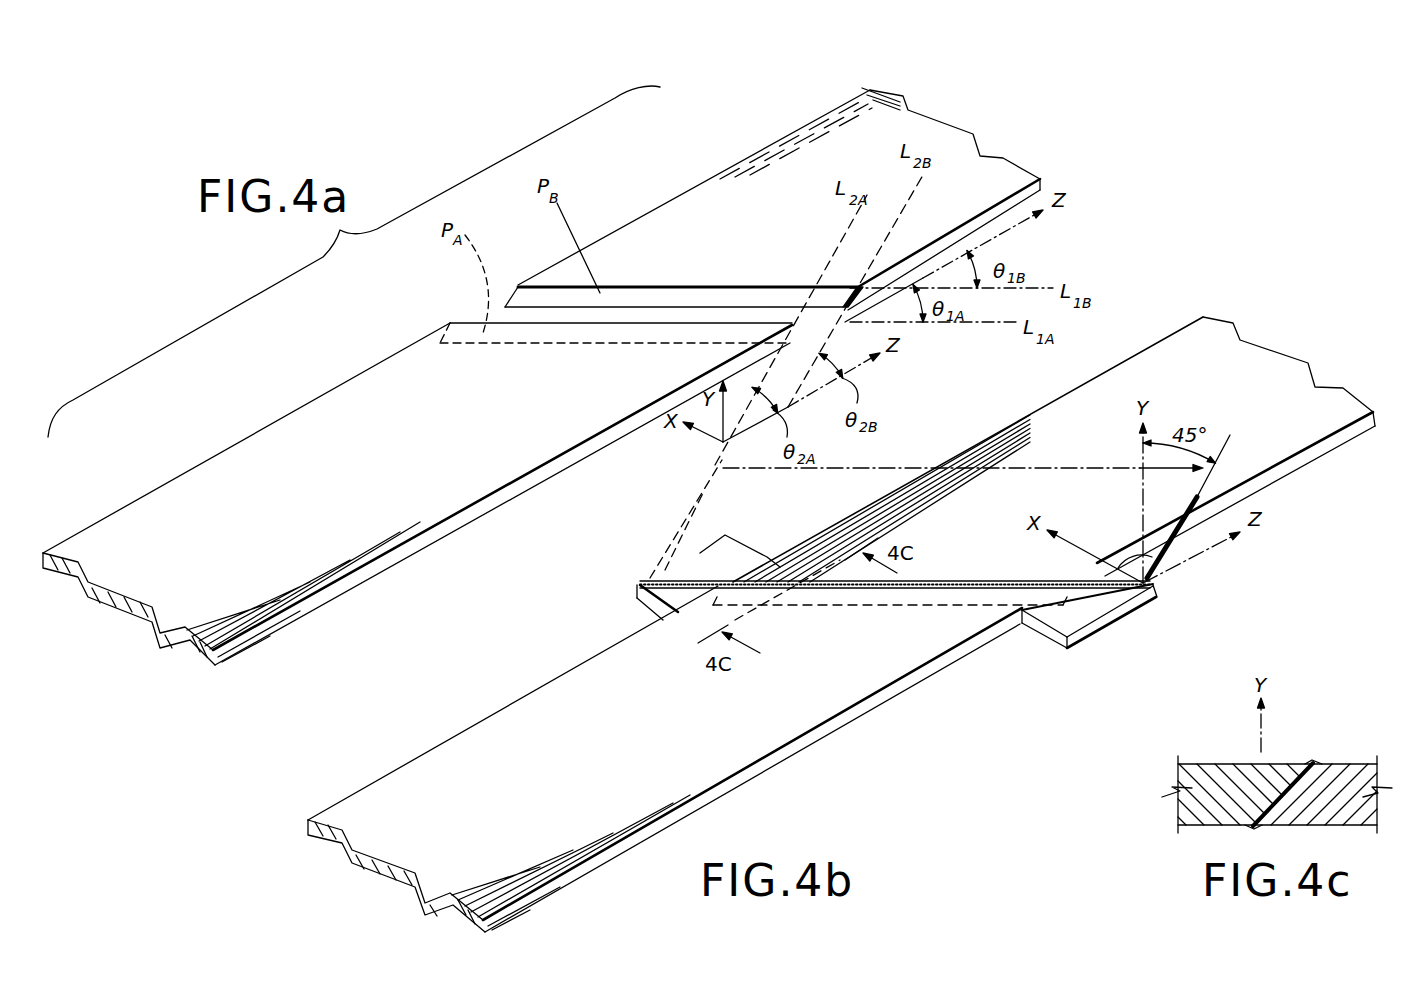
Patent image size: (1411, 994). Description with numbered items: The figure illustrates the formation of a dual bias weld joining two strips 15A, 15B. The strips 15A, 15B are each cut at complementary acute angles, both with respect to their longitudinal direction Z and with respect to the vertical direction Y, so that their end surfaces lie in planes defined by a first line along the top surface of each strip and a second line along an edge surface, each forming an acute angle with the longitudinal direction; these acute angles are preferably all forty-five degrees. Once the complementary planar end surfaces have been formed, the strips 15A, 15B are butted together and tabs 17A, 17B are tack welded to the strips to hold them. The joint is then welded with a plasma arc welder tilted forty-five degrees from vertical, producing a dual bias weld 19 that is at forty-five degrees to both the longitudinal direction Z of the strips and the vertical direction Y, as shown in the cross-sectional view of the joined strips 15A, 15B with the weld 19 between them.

In FIG. 4A, the strip 15A is at (250, 467).
In FIG. 4B, the strip 15A is at (525, 720).
In FIG. 4C, the strip 15A is at (1208, 763).
In FIG. 4A, the strip 15B is at (765, 195).
In FIG. 4B, the strip 15B is at (1197, 362).
In FIG. 4C, the strip 15B is at (1353, 763).
In FIG. 4B, the tab 17A is at (728, 553).
In FIG. 4B, the tab 17B is at (1058, 620).
In FIG. 4B, the dual bias weld 19 is at (960, 580).
In FIG. 4C, the dual bias weld 19 is at (1317, 762).